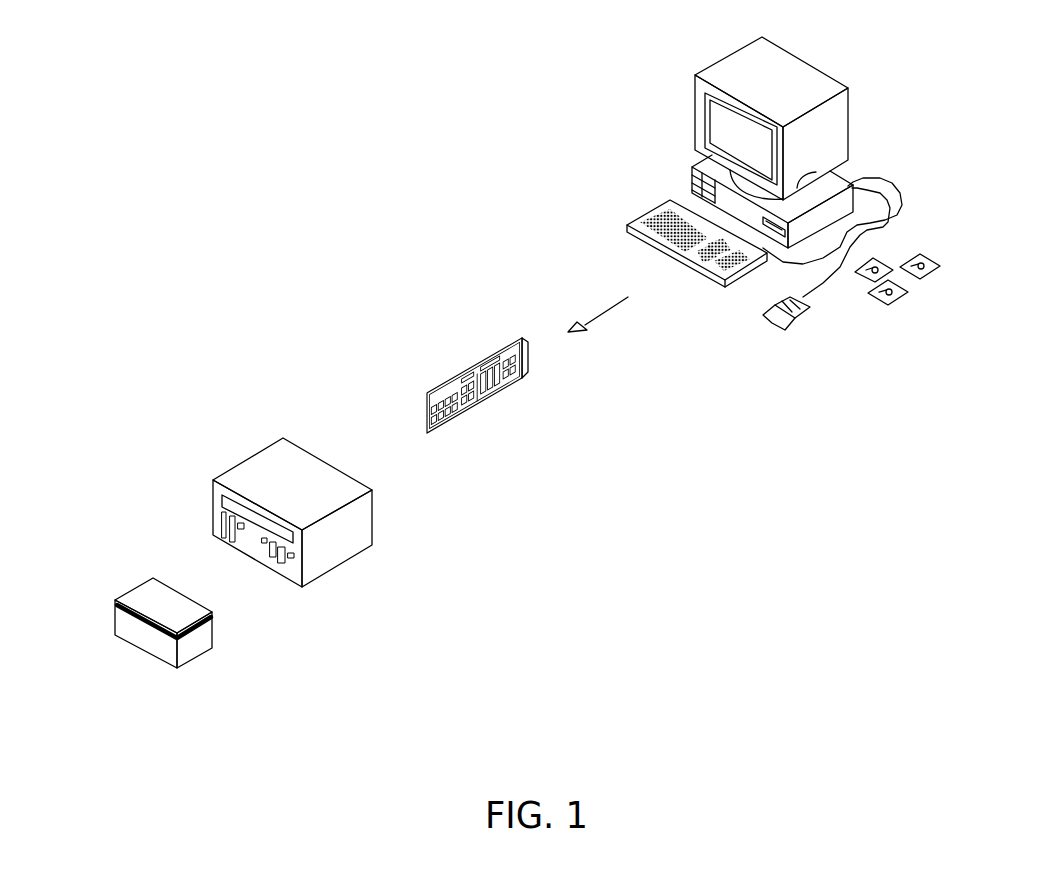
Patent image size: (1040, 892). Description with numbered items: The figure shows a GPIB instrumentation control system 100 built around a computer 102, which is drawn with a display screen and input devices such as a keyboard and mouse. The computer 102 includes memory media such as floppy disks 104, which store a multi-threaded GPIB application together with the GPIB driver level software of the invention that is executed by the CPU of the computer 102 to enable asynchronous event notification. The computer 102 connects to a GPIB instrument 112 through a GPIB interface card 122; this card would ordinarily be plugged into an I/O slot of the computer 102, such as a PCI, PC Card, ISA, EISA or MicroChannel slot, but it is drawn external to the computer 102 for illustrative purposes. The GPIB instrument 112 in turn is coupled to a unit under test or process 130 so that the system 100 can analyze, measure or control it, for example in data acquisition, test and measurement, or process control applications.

The GPIB instrumentation control system 100 is at (536, 343).
The computer 102 is at (764, 174).
The floppy disks 104 is at (935, 246).
The GPIB instrument 112 is at (277, 504).
The GPIB interface card 122 is at (447, 385).
The unit under test or process 130 is at (134, 607).